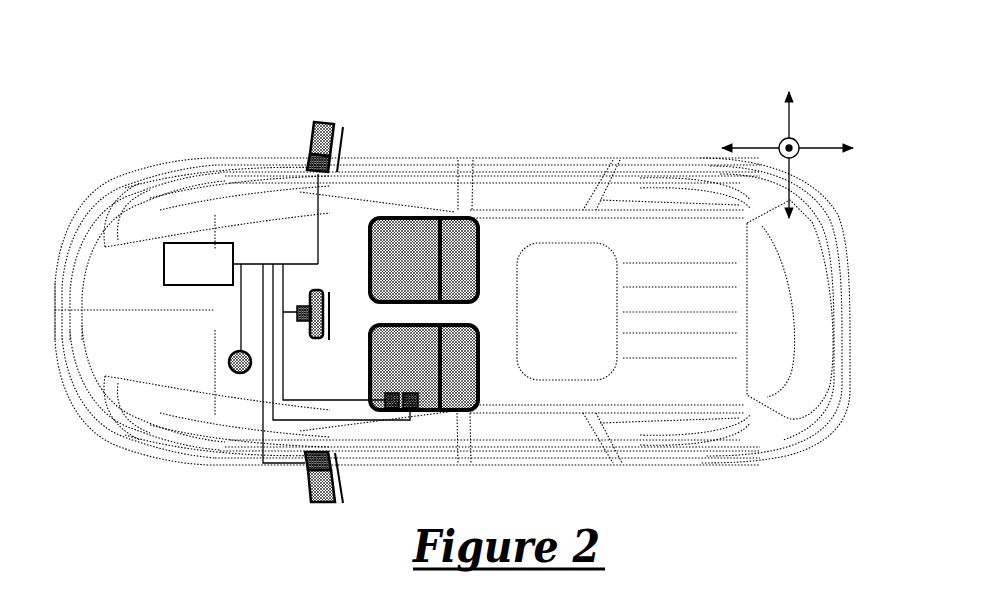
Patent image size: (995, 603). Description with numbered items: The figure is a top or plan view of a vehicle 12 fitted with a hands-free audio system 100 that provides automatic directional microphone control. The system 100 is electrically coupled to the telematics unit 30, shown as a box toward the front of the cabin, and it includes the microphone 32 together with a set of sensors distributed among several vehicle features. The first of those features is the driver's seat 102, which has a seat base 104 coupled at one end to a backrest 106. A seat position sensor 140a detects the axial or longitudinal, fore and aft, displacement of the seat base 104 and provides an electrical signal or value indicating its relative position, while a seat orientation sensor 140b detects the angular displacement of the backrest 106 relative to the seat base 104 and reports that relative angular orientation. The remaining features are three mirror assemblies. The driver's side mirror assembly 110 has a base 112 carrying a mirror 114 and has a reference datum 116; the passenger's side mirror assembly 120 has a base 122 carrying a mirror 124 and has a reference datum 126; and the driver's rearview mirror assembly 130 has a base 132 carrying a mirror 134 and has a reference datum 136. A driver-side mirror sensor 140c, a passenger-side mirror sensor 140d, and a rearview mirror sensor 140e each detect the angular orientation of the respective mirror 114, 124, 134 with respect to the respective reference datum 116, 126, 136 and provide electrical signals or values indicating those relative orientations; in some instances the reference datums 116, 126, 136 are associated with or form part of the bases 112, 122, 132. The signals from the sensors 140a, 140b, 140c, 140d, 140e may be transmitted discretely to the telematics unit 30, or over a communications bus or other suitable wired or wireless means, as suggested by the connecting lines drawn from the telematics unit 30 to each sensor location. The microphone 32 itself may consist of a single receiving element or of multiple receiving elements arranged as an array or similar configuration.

The vehicle 12 is at (760, 44).
The telematics unit 30 is at (198, 264).
The microphone 32 is at (229, 360).
The hands-free audio system 100 is at (262, 200).
The driver's seat 102 is at (486, 314).
The seat base 104 is at (415, 332).
The backrest 106 is at (460, 340).
The driver's side mirror assembly 110 is at (317, 517).
The base 112 is at (311, 497).
The mirror 114 is at (344, 480).
The reference datum 116 is at (305, 485).
The passenger's side mirror assembly 120 is at (330, 121).
The base 122 is at (309, 150).
The mirror 124 is at (344, 152).
The reference datum 126 is at (320, 121).
The driver's rearview mirror assembly 130 is at (328, 297).
The base 132 is at (301, 323).
The mirror 134 is at (330, 337).
The reference datum 136 is at (311, 289).
The seat position sensor 140a is at (388, 393).
The seat orientation sensor 140b is at (415, 393).
The driver-side mirror sensor 140c is at (306, 467).
The passenger-side mirror sensor 140d is at (329, 172).
The rearview mirror sensor 140e is at (302, 324).